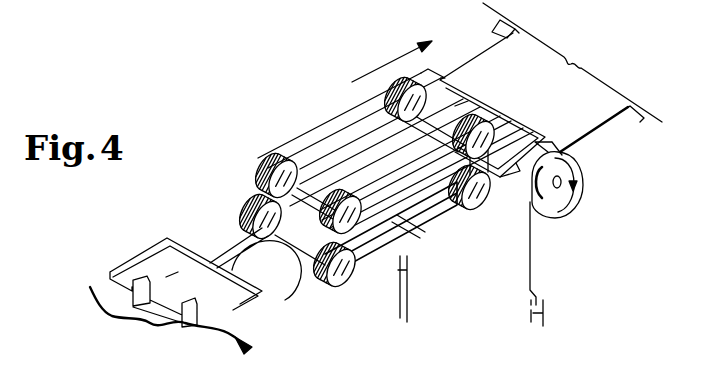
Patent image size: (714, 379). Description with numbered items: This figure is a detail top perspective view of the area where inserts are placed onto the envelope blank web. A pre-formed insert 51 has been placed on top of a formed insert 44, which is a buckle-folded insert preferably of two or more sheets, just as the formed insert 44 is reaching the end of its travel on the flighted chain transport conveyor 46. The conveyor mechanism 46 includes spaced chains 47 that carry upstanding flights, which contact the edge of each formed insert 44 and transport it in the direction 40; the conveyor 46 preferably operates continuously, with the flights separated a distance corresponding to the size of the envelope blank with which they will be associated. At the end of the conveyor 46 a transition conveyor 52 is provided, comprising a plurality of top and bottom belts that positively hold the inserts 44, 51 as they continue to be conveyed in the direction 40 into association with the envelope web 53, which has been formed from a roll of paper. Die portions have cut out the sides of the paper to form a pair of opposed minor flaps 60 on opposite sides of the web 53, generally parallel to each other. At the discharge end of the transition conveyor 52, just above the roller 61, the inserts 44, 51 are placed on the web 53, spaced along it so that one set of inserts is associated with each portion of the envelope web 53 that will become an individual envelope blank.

The first direction 40 is at (393, 62).
The formed insert 44 is at (548, 148).
The flighted chain transport conveyor 46 is at (100, 291).
The chain 47 is at (218, 260).
The pre-formed insert 51 is at (461, 103).
The transition conveyor 52 is at (326, 92).
The envelope web 53 is at (603, 134).
The minor flap 60 is at (400, 270).
The roller 61 is at (556, 207).